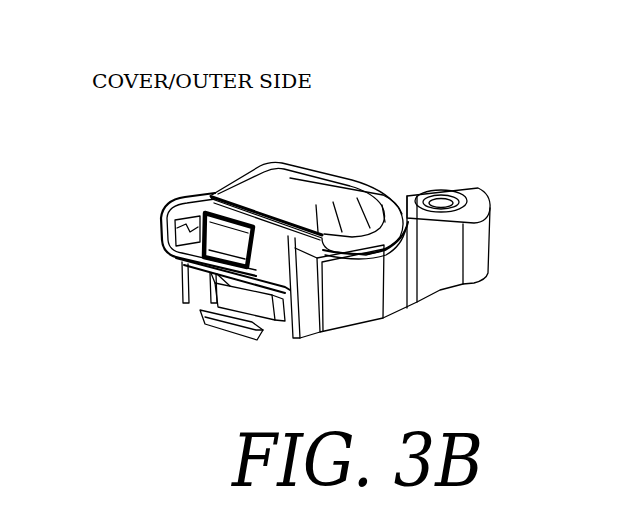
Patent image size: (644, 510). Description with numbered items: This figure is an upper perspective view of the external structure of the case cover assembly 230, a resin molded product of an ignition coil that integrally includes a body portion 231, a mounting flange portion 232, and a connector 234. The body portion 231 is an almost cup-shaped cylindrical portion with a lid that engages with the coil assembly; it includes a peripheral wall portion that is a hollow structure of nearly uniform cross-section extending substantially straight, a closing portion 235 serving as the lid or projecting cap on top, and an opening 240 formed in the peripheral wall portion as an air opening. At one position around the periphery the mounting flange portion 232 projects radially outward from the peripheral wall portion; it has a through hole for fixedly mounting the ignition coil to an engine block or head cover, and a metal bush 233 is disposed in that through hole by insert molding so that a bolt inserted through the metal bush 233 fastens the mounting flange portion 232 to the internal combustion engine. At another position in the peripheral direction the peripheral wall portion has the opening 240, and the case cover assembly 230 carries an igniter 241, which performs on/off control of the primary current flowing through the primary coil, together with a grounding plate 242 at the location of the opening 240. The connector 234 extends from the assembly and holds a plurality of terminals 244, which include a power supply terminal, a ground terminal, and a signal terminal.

The case cover assembly 230 is at (487, 330).
The body portion 231 is at (368, 318).
The mounting flange portion 232 is at (489, 250).
The metal bush 233 is at (443, 193).
The connector 234 is at (193, 203).
The closing portion 235 is at (301, 165).
The opening 240 is at (173, 333).
The igniter 241 is at (273, 324).
The grounding plate 242 is at (224, 320).
The terminals 244 is at (160, 228).